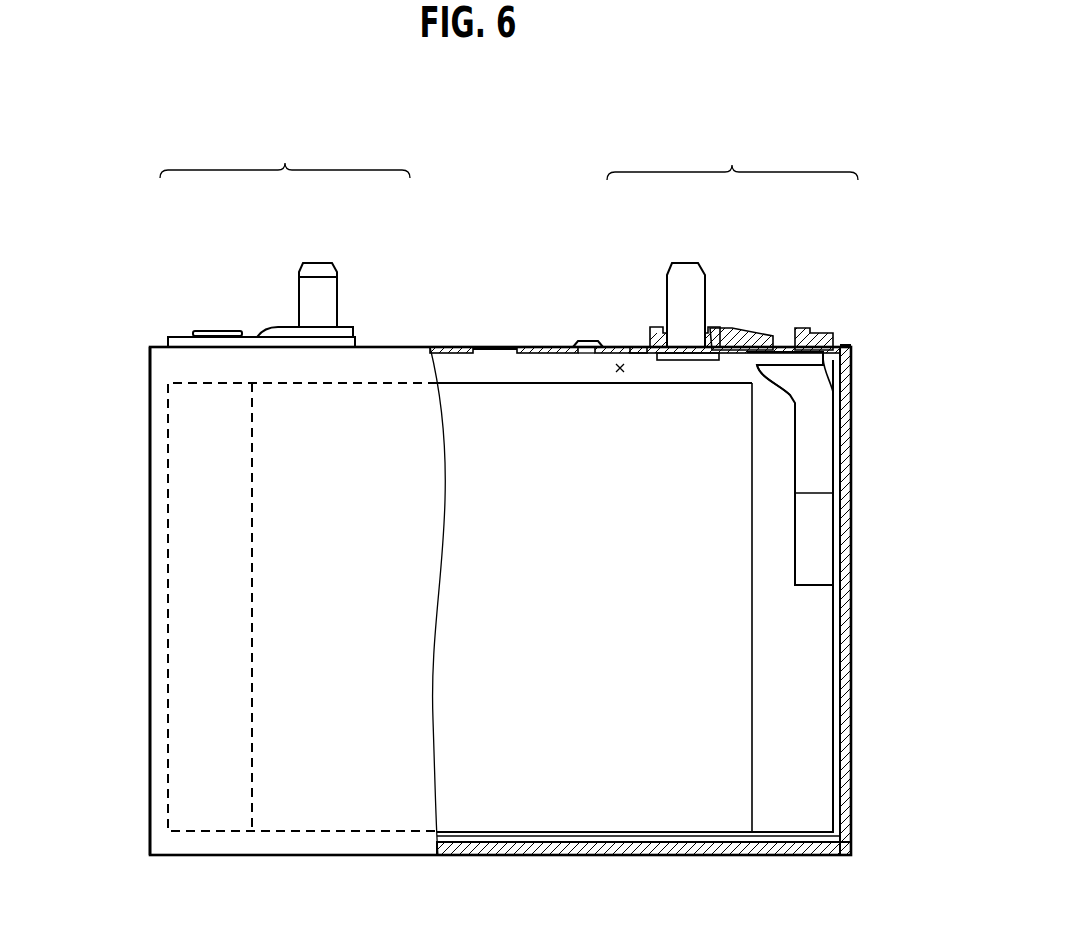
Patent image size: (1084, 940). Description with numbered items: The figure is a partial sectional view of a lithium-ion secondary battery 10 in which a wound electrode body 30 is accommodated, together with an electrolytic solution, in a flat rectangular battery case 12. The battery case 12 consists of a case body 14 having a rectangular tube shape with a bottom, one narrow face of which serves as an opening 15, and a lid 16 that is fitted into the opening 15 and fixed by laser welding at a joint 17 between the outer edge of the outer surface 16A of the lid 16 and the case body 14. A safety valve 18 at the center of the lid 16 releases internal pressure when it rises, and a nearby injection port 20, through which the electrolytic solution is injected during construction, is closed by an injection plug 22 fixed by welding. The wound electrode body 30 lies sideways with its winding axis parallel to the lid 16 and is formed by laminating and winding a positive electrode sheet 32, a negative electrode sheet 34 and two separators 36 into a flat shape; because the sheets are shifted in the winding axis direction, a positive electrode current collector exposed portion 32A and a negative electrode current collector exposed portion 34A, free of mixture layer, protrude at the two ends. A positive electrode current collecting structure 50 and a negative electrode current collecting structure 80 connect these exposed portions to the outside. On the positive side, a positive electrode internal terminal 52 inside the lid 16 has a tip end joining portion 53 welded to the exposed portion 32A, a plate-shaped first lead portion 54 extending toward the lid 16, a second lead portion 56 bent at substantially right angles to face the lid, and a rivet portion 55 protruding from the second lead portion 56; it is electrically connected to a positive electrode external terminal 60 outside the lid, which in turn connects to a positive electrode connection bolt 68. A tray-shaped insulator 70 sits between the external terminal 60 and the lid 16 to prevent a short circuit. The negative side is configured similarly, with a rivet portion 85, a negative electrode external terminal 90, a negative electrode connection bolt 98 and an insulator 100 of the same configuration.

The lithium-ion secondary battery 10 is at (110, 158).
The battery case 12 is at (147, 460).
The case body 14 is at (855, 655).
The opening 15 is at (620, 364).
The lid 16 is at (452, 345).
The outer surface of the lid 16A is at (473, 266).
The joint 17 is at (848, 345).
The safety valve 18 is at (504, 385).
The injection port 20 is at (566, 353).
The injection plug 22 is at (577, 345).
The wound electrode body 30 is at (652, 808).
The positive electrode sheet 32 is at (838, 803).
The positive electrode current collector exposed portion 32A is at (800, 740).
The negative electrode sheet 34 is at (165, 797).
The negative electrode current collector exposed portion 34A is at (192, 701).
The separator 36 is at (523, 800).
The positive electrode current collecting structure 50 is at (771, 360).
The positive electrode internal terminal 52 is at (793, 472).
The tip end joining portion 53 is at (822, 570).
The first lead portion 54 is at (822, 470).
The rivet portion 55 is at (780, 332).
The second lead portion 56 is at (832, 372).
The positive electrode external terminal 60 is at (718, 330).
The positive electrode connection bolt 68 is at (665, 262).
The insulator 70 is at (645, 338).
The negative electrode current collecting structure 80 is at (291, 237).
The rivet portion 85 is at (218, 330).
The negative electrode external terminal 90 is at (284, 326).
The negative electrode connection bolt 98 is at (346, 273).
The insulator 100 is at (362, 338).